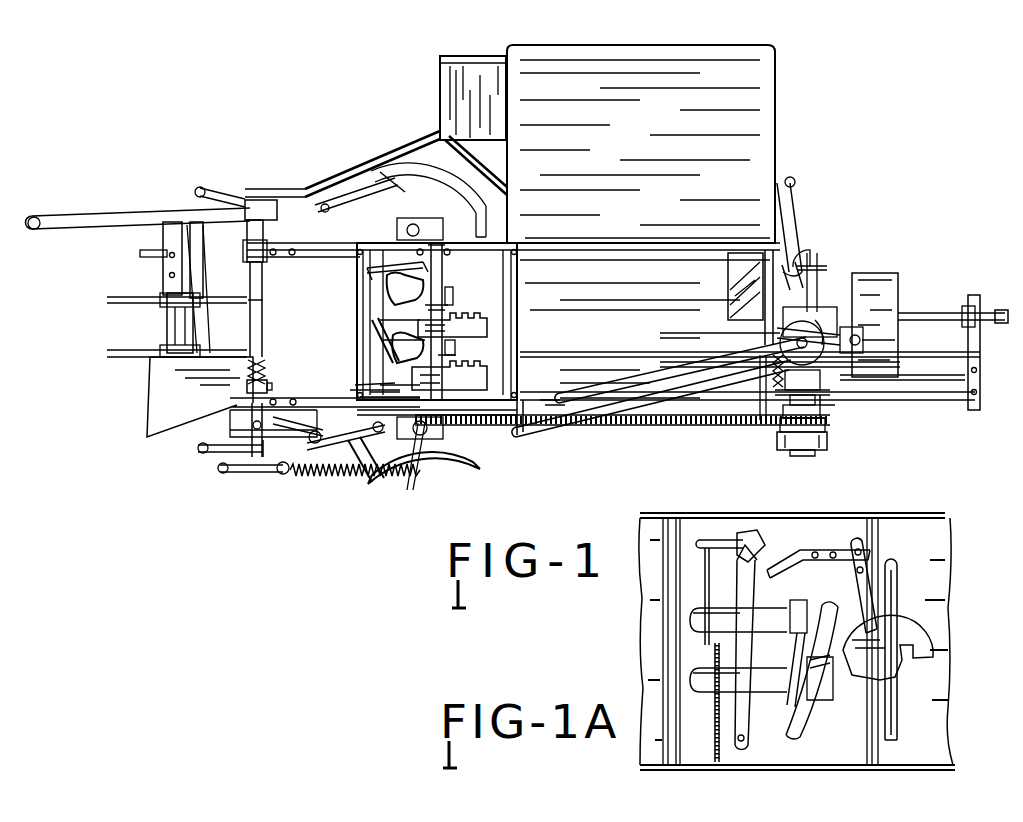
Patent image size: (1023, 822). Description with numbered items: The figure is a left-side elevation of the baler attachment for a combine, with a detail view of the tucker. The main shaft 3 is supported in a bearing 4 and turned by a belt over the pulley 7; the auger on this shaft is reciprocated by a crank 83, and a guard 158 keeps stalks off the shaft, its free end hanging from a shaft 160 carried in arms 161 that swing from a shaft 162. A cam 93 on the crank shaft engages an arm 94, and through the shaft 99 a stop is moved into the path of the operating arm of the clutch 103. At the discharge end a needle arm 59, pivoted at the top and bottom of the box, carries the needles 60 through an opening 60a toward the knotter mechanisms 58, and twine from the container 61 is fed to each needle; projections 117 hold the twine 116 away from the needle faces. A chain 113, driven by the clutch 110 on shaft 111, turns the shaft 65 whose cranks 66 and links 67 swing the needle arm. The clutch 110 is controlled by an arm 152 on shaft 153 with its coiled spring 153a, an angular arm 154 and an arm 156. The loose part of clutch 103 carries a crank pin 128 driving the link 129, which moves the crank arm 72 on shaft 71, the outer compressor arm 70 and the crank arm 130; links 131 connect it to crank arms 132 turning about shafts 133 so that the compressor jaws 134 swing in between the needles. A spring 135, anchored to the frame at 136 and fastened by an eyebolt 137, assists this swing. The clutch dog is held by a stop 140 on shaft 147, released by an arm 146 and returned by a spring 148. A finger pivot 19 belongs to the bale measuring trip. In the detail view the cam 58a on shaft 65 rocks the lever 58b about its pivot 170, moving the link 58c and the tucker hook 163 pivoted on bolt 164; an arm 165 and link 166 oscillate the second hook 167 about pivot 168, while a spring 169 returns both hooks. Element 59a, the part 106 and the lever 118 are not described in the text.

In FIG. 1, the shaft 3 is at (933, 318).
In FIG. 1, the bearing 4 is at (967, 317).
In FIG. 1, the pulley 7 is at (890, 313).
In FIG. 1, the pivot 19 is at (265, 240).
In FIG. 1, the knotter mechanism 58 is at (397, 380).
In FIG. 1, the cam 58a is at (447, 273).
In FIG. 1A, the lever 58b is at (820, 660).
In FIG. 1A, the link 58c is at (798, 568).
In FIG. 1, the needle arm 59 is at (183, 322).
In FIG. 1A, the cam plate 59a is at (907, 627).
In FIG. 1, the needle 60 is at (405, 318).
In FIG. 1A, the needle 60 is at (817, 620).
In FIG. 1, the opening 60a is at (453, 295).
In FIG. 1, the twine container 61 is at (443, 100).
In FIG. 1, the shaft 65 is at (450, 363).
In FIG. 1A, the shaft 65 is at (893, 590).
In FIG. 1, the crank arm 66 is at (422, 233).
In FIG. 1, the link 67 is at (320, 210).
In FIG. 1, the outer compressor arm 70 is at (118, 322).
In FIG. 1, the shaft 71 is at (267, 358).
In FIG. 1, the crank arm 72 is at (293, 427).
In FIG. 1, the crank 83 is at (815, 285).
In FIG. 1, the cam 93 is at (793, 253).
In FIG. 1, the arm 94 is at (820, 260).
In FIG. 1, the shaft 99 is at (860, 383).
In FIG. 1, the clutch 103 is at (780, 372).
In FIG. 1, the disc 106 is at (818, 313).
In FIG. 1, the clutch 110 is at (792, 453).
In FIG. 1, the shaft 111 is at (803, 453).
In FIG. 1, the chain 113 is at (637, 430).
In FIG. 1A, the twine 116 is at (787, 710).
In FIG. 1A, the projection 117 is at (810, 698).
In FIG. 1, the lever handle 118 is at (85, 215).
In FIG. 1, the crank pin 128 is at (866, 345).
In FIG. 1, the link 129 is at (605, 385).
In FIG. 1, the crank arm 130 is at (227, 202).
In FIG. 1, the link 131 is at (270, 190).
In FIG. 1, the crank arm 132 is at (400, 225).
In FIG. 1, the shaft 133 is at (413, 235).
In FIG. 1, the stalks compressor element 134 is at (487, 207).
In FIG. 1, the spring 135 is at (315, 470).
In FIG. 1, the frame element anchorage 136 is at (515, 463).
In FIG. 1, the eyebolt 137 is at (220, 473).
In FIG. 1, the stop 140 is at (738, 337).
In FIG. 1, the arm 146 is at (827, 413).
In FIG. 1, the shaft 147 is at (793, 387).
In FIG. 1, the spring 148 is at (795, 400).
In FIG. 1, the arm 152 is at (827, 432).
In FIG. 1, the shaft 153 is at (827, 423).
In FIG. 1, the spring 153a is at (787, 420).
In FIG. 1, the angular arm 154 is at (802, 380).
In FIG. 1, the arm 156 is at (847, 395).
In FIG. 1, the guard 158 is at (733, 270).
In FIG. 1, the shaft 160 is at (780, 257).
In FIG. 1, the arm 161 is at (790, 207).
In FIG. 1, the shaft 162 is at (797, 180).
In FIG. 1A, the tucker hook 163 is at (788, 603).
In FIG. 1A, the bolt 164 is at (775, 533).
In FIG. 1A, the arm 165 is at (719, 582).
In FIG. 1, the link 166 is at (385, 300).
In FIG. 1A, the link 166 is at (735, 575).
In FIG. 1, the tucker hook 167 is at (385, 320).
In FIG. 1A, the tucker hook 167 is at (700, 640).
In FIG. 1A, the pivot 168 is at (700, 660).
In FIG. 1, the spring 169 is at (387, 338).
In FIG. 1A, the spring 169 is at (717, 700).
In FIG. 1A, the pivot 170 is at (870, 547).